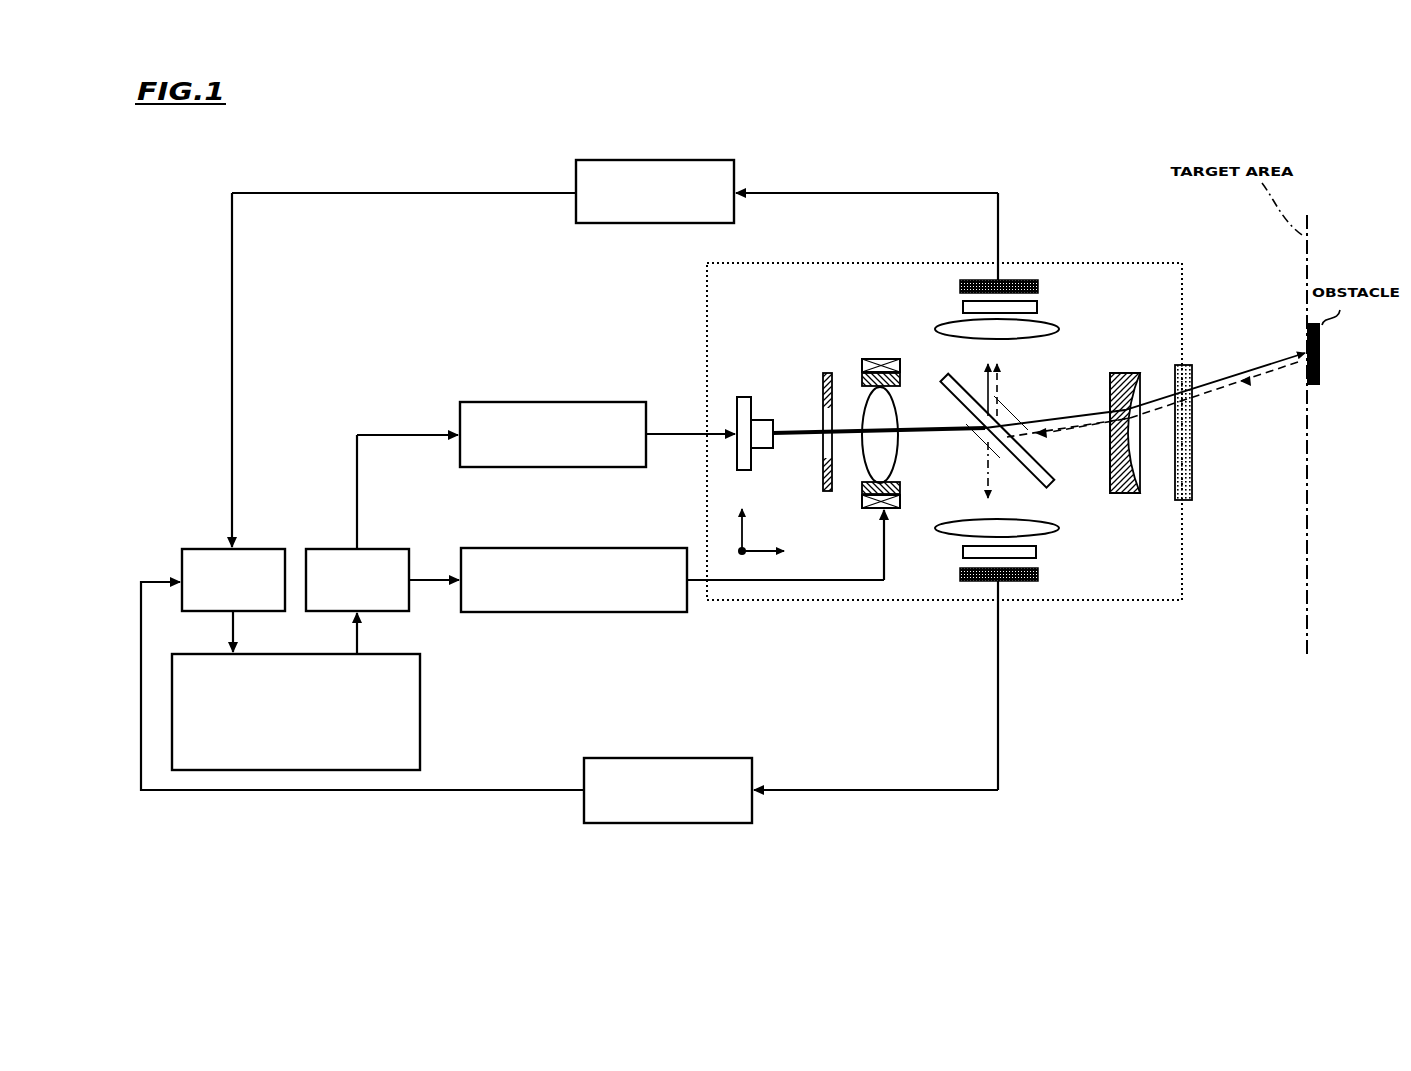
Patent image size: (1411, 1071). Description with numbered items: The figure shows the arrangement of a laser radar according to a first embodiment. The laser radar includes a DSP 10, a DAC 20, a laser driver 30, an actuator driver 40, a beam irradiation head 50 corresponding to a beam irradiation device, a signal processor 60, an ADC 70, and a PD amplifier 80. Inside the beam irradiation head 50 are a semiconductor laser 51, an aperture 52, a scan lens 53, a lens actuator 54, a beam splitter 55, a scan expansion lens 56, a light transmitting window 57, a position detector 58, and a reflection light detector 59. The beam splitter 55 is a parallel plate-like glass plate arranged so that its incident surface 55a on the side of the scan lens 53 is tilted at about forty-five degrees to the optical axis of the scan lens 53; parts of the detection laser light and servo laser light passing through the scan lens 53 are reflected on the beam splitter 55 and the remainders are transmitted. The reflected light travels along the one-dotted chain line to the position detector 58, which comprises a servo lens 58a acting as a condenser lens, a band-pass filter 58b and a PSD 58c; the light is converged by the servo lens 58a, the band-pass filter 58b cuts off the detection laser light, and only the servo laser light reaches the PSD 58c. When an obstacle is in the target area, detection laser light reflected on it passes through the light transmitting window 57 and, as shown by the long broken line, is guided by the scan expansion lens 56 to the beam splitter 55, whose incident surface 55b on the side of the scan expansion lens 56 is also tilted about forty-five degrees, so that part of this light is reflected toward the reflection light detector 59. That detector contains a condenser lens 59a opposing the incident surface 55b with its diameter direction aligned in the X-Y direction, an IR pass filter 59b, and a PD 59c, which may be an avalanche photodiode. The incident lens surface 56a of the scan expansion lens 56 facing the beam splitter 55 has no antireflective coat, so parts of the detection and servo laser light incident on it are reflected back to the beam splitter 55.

The DSP 10 is at (420, 710).
The DAC 20 is at (378, 549).
The laser driver 30 is at (533, 402).
The actuator driver 40 is at (545, 548).
The beam irradiation head 50 is at (858, 602).
The semiconductor laser 51 is at (738, 397).
The aperture 52 is at (828, 373).
The scan lens 53 is at (896, 447).
The lens actuator 54 is at (880, 359).
The beam splitter 55 is at (948, 381).
The incident surface 55a is at (987, 439).
The incident surface 55b is at (1012, 428).
The scan expansion lens 56 is at (1143, 373).
The incident lens surface 56a is at (1110, 426).
The light transmitting window 57 is at (1190, 365).
The position detector 58 is at (1044, 590).
The servo lens 58a is at (1059, 528).
The band-pass filter 58b is at (1036, 552).
The PSD 58c is at (1038, 575).
The reflection light detector 59 is at (1044, 271).
The condenser lens 59a is at (1059, 329).
The IR pass filter 59b is at (1037, 307).
The PD 59c is at (1038, 286).
The signal processor 60 is at (635, 758).
The ADC 70 is at (253, 549).
The PD amplifier 80 is at (670, 223).